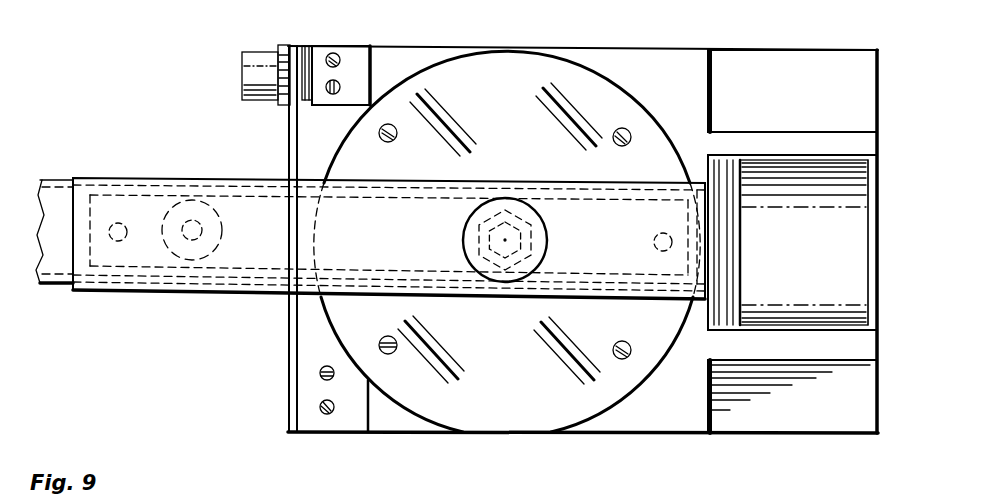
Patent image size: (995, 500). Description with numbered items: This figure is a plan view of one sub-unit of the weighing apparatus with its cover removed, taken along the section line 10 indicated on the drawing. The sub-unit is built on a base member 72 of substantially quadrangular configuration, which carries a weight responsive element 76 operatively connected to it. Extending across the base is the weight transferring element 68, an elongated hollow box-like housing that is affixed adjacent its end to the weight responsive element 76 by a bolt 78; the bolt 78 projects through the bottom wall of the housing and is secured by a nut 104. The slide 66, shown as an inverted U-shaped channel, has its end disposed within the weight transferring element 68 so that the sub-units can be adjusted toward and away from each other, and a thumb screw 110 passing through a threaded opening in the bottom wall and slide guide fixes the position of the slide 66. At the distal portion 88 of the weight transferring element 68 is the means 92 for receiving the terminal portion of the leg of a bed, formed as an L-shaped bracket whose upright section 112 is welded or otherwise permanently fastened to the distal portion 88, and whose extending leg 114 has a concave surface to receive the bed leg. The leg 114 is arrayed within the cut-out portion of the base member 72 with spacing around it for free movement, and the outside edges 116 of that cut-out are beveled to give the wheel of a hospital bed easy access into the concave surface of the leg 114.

The section line 10- 10 is at (56, 163).
The slide 66 is at (57, 286).
The weight transferring element 68 is at (239, 139).
The base member 72 is at (418, 422).
The weight responsive element 76 is at (532, 153).
The bolt 78 is at (548, 241).
The distal portion 88 is at (697, 181).
The means for receiving the terminal portion of the leg of a bed 92 is at (898, 224).
The nut 104 is at (478, 241).
The thumb screw 110 is at (222, 236).
The upright section 112 is at (735, 241).
The extending leg 114 is at (879, 288).
The outside edges 116 is at (798, 60).